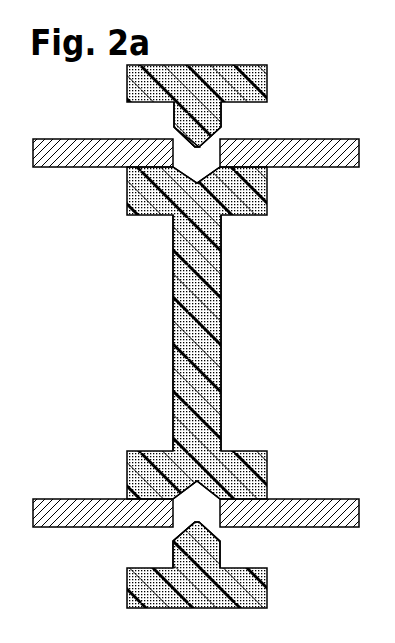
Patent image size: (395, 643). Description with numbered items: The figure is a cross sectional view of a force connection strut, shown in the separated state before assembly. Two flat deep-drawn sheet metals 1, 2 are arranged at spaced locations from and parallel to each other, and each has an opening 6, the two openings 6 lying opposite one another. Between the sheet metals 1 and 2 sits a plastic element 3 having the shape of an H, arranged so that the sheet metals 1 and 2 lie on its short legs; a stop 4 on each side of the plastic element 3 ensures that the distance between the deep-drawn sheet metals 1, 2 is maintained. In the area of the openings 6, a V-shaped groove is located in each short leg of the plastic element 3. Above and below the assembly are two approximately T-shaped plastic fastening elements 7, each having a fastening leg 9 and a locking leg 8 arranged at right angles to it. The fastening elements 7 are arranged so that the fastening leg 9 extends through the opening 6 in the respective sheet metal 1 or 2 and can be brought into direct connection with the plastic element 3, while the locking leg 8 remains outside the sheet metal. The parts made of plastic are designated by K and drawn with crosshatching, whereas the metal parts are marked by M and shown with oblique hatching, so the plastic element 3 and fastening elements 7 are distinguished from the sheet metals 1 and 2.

The deep-drawn sheet metal 1 is at (95, 168).
The deep-drawn sheet metal 2 is at (88, 528).
The plastic element 3 is at (221, 365).
The stop 4 is at (251, 205).
The opening 6 is at (198, 154).
The plastic fastening element 7 is at (205, 113).
The locking leg 8 is at (257, 66).
The fastening leg 9 is at (173, 125).
The plastic parts designation K is at (203, 334).
The metal parts designation M is at (308, 158).